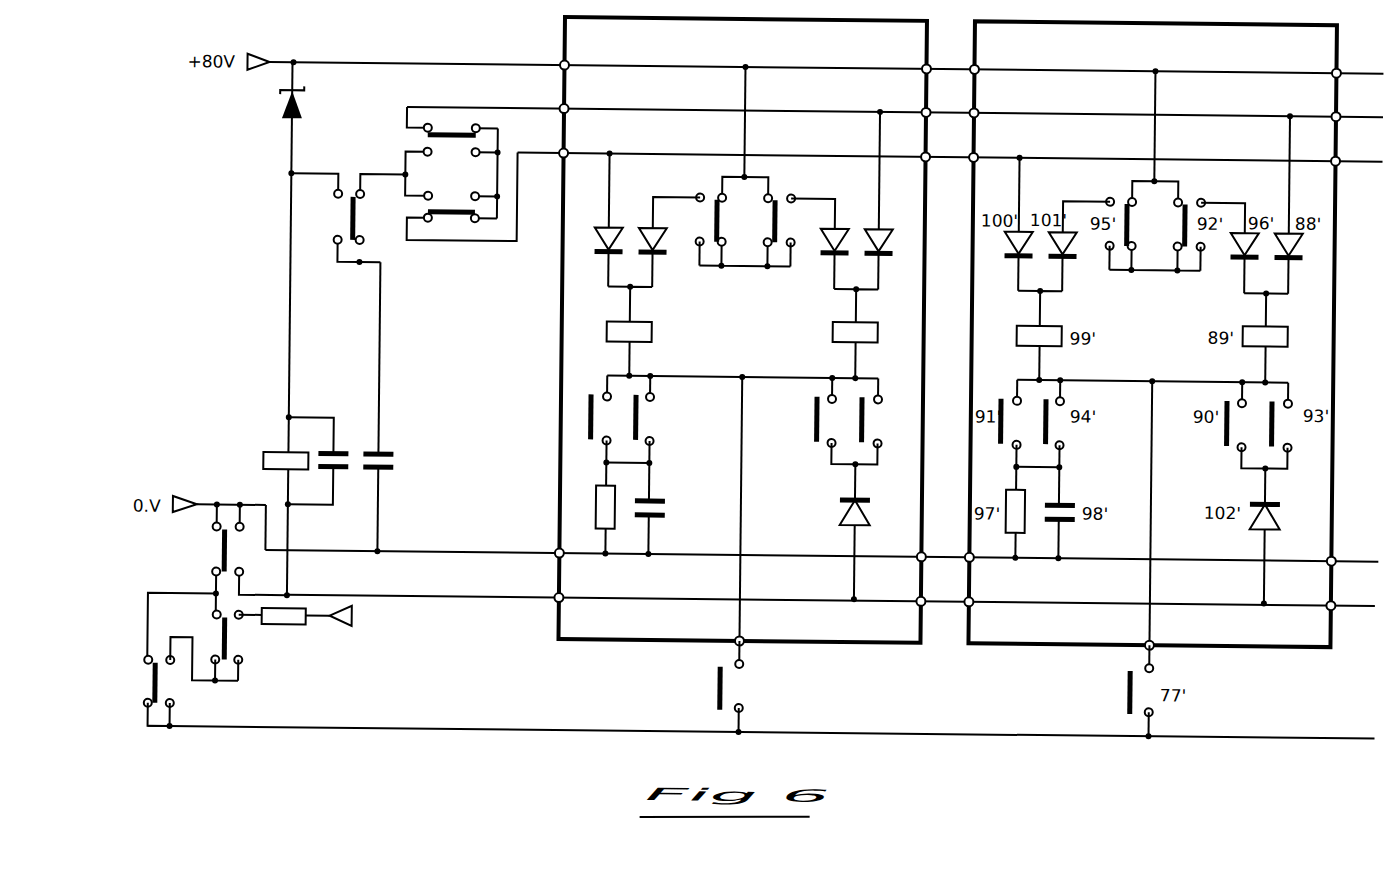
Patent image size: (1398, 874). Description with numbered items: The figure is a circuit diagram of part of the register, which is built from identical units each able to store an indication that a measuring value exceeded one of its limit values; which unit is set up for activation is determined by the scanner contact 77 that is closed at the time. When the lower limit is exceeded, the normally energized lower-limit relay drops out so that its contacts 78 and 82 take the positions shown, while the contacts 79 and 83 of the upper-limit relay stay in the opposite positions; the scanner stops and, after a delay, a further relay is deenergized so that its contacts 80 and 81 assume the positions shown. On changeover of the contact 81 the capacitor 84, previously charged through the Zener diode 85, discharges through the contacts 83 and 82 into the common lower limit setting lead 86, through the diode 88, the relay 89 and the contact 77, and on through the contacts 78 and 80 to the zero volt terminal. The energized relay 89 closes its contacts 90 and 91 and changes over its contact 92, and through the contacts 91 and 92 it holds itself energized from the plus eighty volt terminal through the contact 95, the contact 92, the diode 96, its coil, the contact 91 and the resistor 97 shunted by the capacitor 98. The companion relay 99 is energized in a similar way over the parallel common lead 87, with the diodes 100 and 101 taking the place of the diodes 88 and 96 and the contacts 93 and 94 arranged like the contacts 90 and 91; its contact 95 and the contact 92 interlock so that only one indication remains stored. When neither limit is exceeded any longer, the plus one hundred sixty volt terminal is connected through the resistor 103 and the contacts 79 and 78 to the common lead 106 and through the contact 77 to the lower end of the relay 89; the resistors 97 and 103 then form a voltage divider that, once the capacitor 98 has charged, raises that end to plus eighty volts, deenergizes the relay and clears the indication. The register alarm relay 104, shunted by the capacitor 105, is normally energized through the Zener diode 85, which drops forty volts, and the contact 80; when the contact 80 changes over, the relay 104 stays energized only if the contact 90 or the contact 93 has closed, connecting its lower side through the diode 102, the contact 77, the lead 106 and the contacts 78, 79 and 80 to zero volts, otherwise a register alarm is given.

The contact 77 is at (745, 688).
The contact 78 is at (145, 692).
The relay contact 79 is at (213, 647).
The contact 80 is at (240, 551).
The contact 81 is at (347, 217).
The relay contact 82 is at (453, 162).
The relay contact 83 is at (461, 196).
The capacitor 84 is at (386, 408).
The Zener diode 85 is at (273, 118).
The common lower limit setting lead 86 is at (895, 102).
The supply line 87 is at (950, 147).
The diode 88 is at (886, 199).
The relay 89 is at (838, 352).
The contact 90 is at (820, 420).
The contact 91 is at (588, 418).
The contact 92 is at (785, 230).
The contact 93 is at (885, 421).
The switch contact 94 is at (658, 419).
The contact 95 is at (704, 229).
The diode 96 is at (825, 243).
The resistor 97 is at (590, 509).
The capacitor 98 is at (664, 510).
The relay 99 is at (643, 351).
The diode 100 is at (597, 218).
The diode 101 is at (660, 242).
The diode 102 is at (832, 532).
The resistor 103 is at (331, 630).
The relay 104 is at (271, 450).
The capacitor 105 is at (317, 461).
The common lead 106 is at (761, 722).